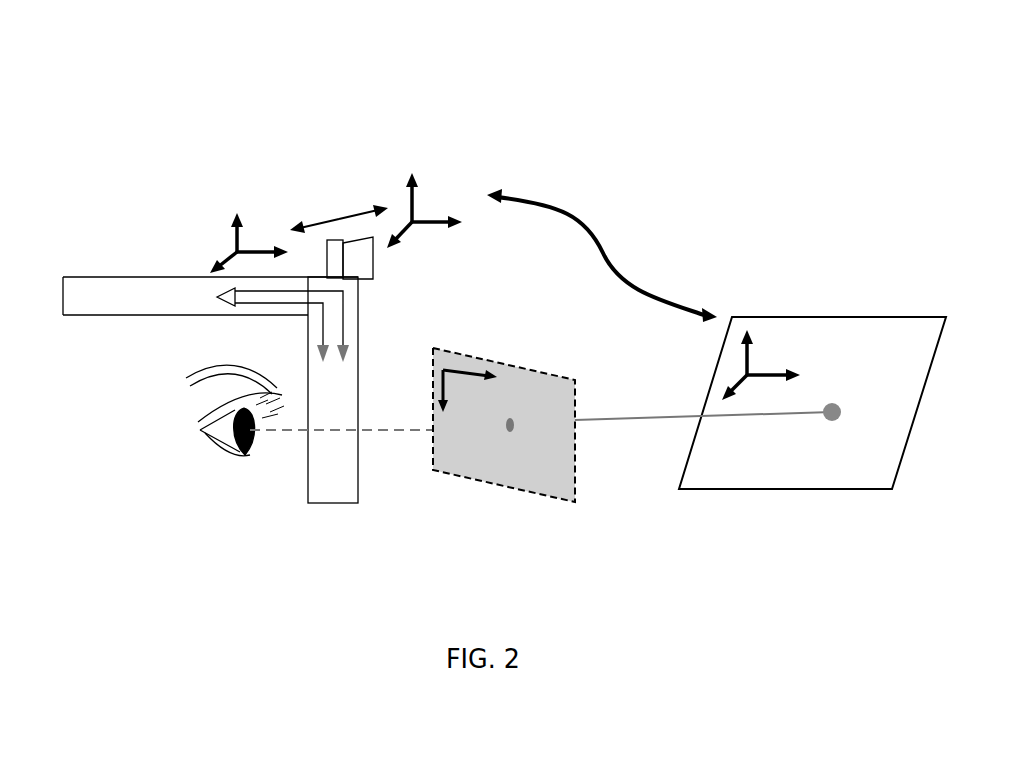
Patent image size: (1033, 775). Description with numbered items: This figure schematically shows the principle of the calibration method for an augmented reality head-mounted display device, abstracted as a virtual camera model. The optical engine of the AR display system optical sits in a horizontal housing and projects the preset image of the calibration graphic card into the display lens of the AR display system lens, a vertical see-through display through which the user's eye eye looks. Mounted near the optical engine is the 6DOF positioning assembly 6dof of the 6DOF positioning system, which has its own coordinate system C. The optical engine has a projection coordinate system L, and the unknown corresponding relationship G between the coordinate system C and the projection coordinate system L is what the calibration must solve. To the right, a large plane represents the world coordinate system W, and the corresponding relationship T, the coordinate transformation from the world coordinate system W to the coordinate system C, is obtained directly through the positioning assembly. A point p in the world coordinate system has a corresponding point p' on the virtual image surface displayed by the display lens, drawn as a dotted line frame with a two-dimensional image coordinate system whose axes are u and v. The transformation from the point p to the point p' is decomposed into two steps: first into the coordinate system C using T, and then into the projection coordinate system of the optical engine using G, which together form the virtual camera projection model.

The optical engine of the AR display system optical is at (217, 297).
The 6DOF positioning assembly 6dof is at (338, 240).
The display lens of the AR display system lens is at (340, 505).
The element eye is at (348, 410).
The projection coordinate system of the optical engine L is at (249, 243).
The corresponding relationship G is at (339, 208).
The coordinate system of the 6DOF positioning system C is at (424, 210).
The corresponding relationship T is at (602, 255).
The world coordinate system W is at (812, 403).
The point P p is at (708, 432).
The u axis u is at (504, 425).
The v axis v is at (451, 396).
The point P' p' is at (519, 445).